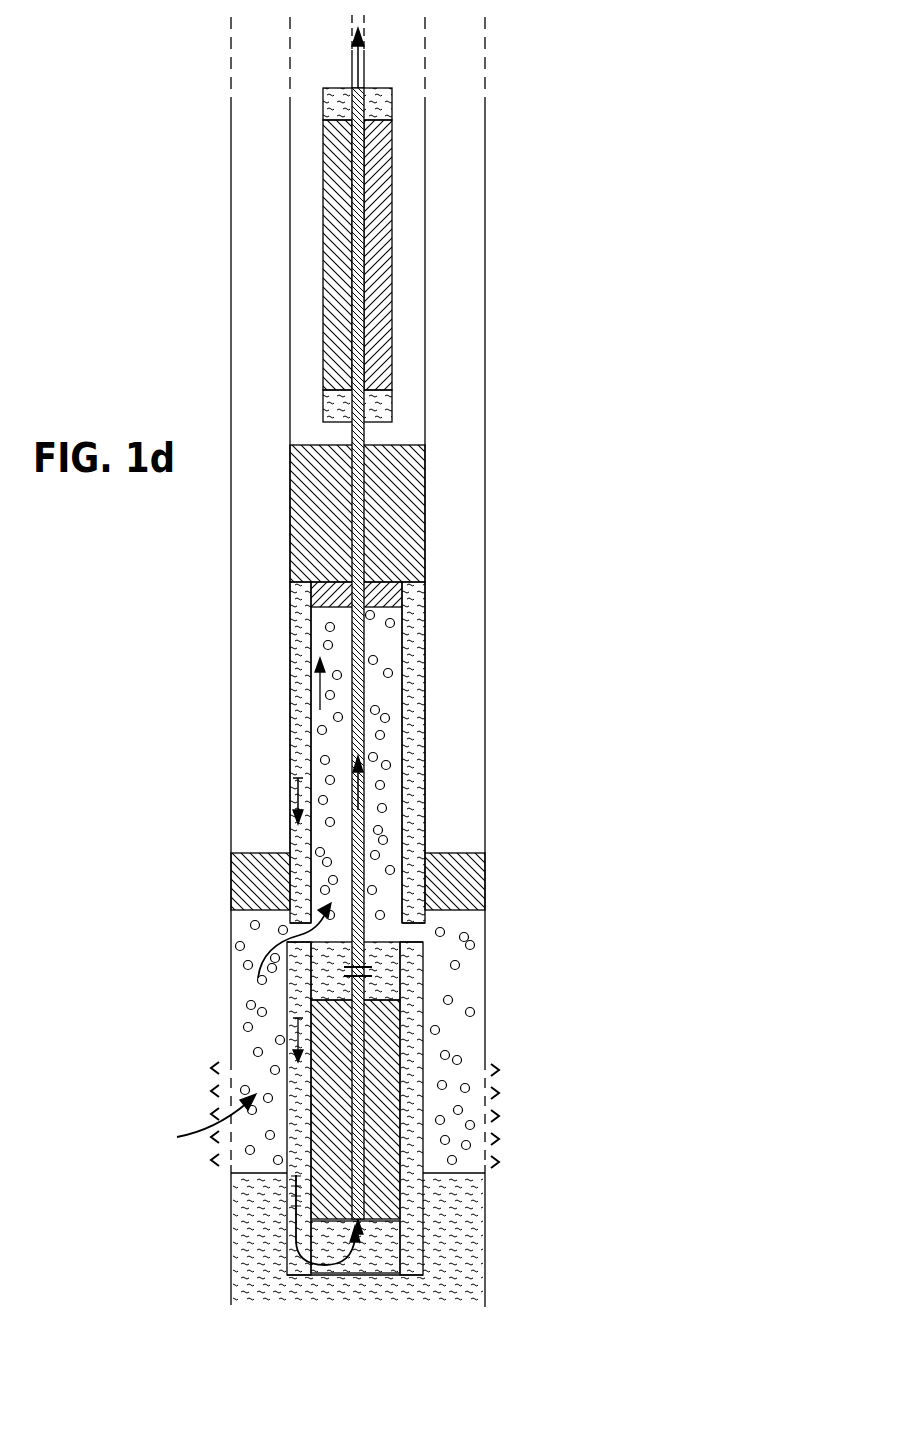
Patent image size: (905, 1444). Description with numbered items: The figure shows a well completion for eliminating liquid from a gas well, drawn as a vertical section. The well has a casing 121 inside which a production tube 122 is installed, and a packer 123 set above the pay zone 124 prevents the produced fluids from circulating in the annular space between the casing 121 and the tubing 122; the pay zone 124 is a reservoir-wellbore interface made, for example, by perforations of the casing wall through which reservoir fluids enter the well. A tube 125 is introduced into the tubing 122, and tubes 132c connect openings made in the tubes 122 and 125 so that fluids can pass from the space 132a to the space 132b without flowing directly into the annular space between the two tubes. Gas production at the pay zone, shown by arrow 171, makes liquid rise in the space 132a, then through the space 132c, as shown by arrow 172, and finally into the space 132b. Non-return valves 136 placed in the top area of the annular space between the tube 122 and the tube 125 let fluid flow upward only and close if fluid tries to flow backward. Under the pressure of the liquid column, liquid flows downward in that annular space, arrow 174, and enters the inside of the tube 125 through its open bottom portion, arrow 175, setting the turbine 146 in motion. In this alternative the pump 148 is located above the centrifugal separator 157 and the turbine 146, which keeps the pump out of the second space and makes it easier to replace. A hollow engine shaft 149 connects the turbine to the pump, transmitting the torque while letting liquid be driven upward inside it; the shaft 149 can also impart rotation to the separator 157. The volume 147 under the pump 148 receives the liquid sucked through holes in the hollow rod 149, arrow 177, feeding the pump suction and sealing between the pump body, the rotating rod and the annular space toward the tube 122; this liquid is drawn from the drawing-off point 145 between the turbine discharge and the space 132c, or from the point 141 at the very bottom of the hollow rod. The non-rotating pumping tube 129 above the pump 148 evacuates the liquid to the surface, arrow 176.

The casing 121 is at (485, 122).
The production tube 122 is at (425, 185).
The packer 123 is at (253, 882).
The pay zone 124 is at (195, 1159).
The tube 125 is at (410, 727).
The riser tube 129 is at (366, 57).
The space 132a is at (436, 1023).
The space 132b is at (378, 777).
The tubes 132c is at (405, 930).
The non-return valves 136 is at (403, 590).
The drawing-off point 141 is at (362, 1223).
The drawing-off point 145 is at (340, 973).
The turbine 146 is at (375, 1175).
The volume 147 is at (323, 405).
The pump 148 is at (335, 268).
The engine shaft 149 is at (364, 650).
The centrifugal separator 157 is at (393, 518).
The arrow 171 is at (187, 1133).
The arrow 172 is at (262, 955).
The arrow 174 is at (298, 797).
The arrow 175 is at (296, 1232).
The arrow 176 is at (352, 80).
The arrow 177 is at (348, 780).